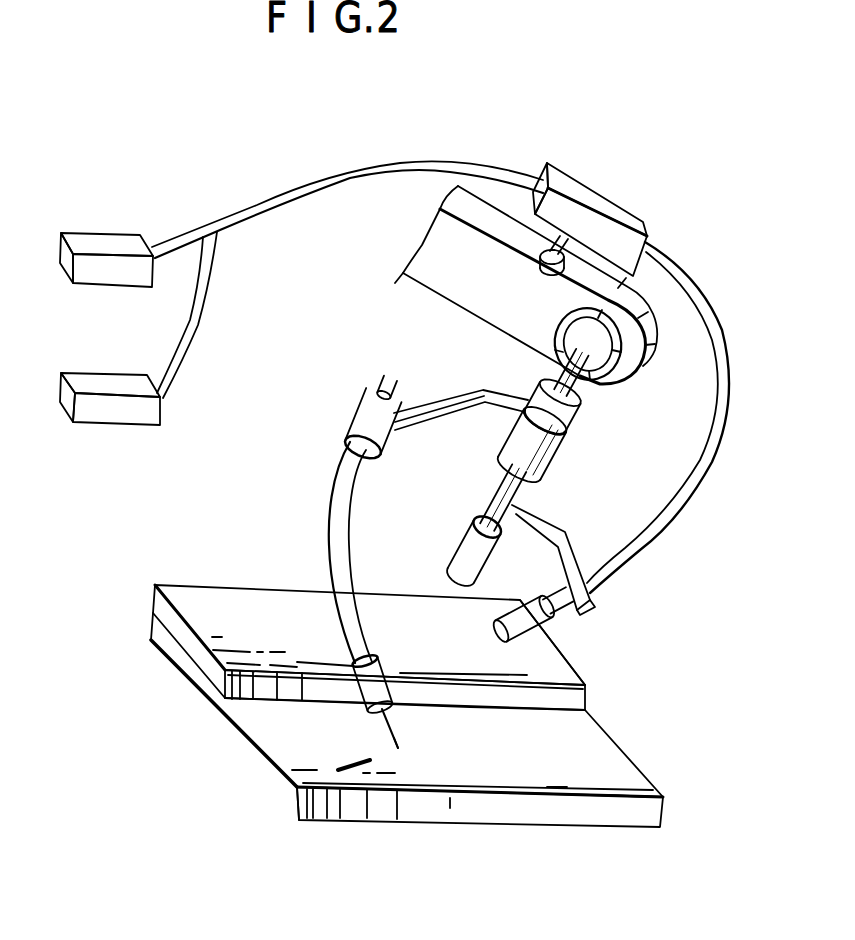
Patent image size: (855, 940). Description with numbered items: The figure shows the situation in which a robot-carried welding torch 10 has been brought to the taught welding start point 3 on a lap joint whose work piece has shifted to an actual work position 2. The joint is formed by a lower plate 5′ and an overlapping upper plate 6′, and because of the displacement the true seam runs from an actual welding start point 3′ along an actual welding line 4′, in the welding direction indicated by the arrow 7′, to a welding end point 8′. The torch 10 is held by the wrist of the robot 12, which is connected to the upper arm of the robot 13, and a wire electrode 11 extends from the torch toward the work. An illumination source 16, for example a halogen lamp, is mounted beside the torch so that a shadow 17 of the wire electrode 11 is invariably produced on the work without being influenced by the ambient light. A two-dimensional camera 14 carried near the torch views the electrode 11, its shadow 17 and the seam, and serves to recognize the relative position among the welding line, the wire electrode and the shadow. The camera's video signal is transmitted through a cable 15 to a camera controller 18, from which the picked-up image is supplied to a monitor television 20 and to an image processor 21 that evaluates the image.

The actual work position 2 is at (499, 834).
The taught welding start point 3 is at (400, 749).
The actual welding start point 3′ is at (228, 698).
The actual welding line 4′ is at (535, 710).
The lower plate 5′ is at (622, 765).
The upper plate 6′ is at (228, 598).
The arrow indicating welding direction 7′ is at (479, 713).
The welding end point 8′ is at (587, 697).
The welding torch 10 is at (332, 543).
The wire electrode 11 is at (386, 732).
The wrist of the robot 12 is at (578, 409).
The upper arm of the robot 13 is at (472, 287).
The two-dimensional camera 14 is at (500, 620).
The cable 15 is at (705, 297).
The illumination source 16 is at (458, 556).
The shadow of the wire electrode 17 is at (347, 762).
The camera controller 18 is at (590, 220).
The monitor television 20 is at (116, 246).
The image processor 21 is at (113, 380).